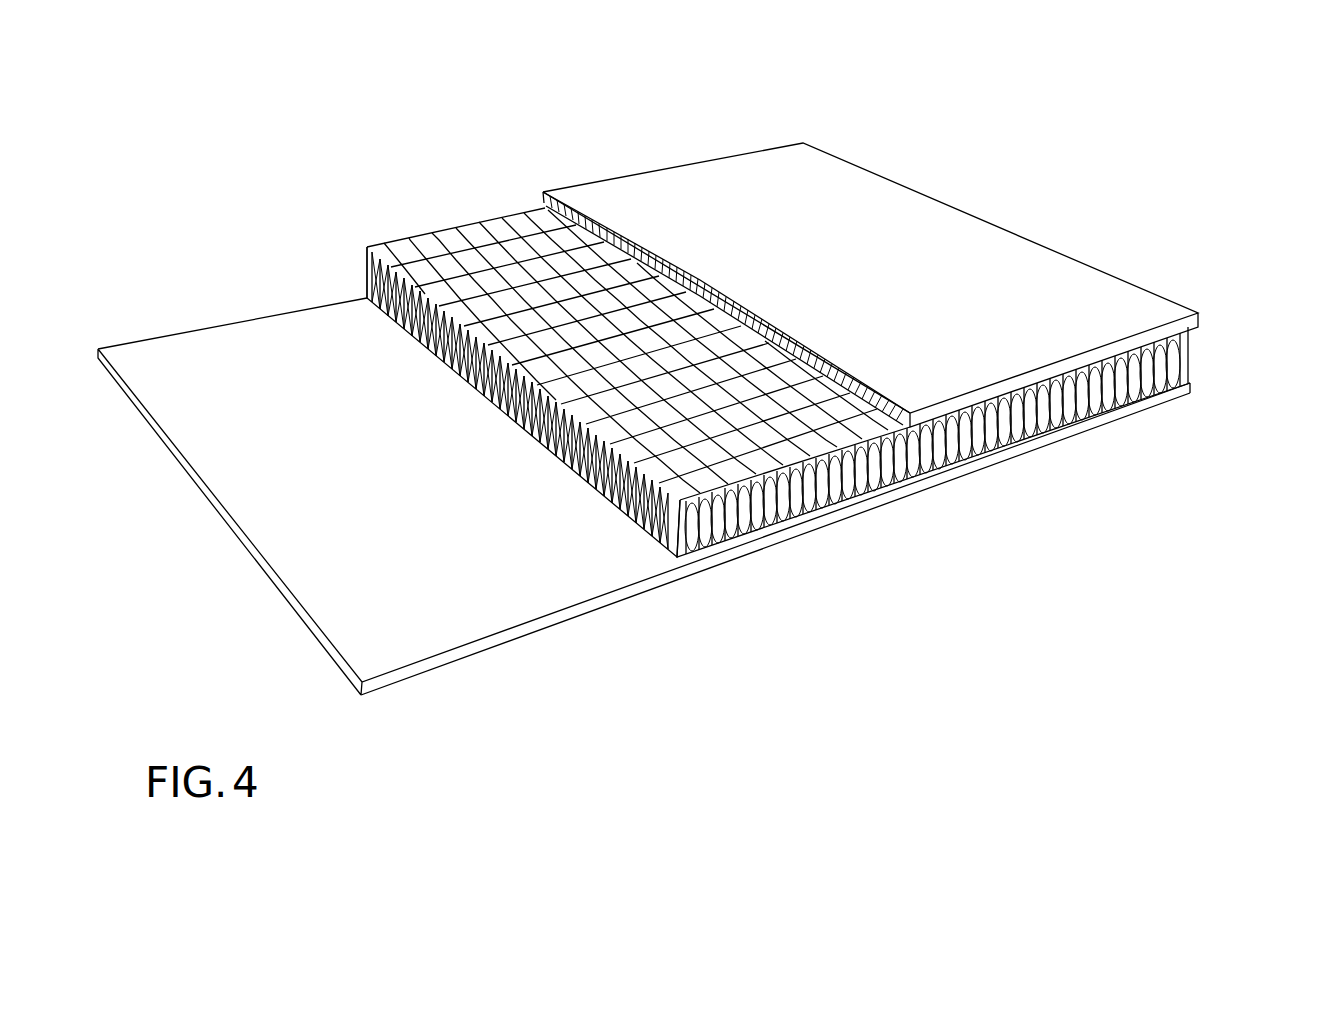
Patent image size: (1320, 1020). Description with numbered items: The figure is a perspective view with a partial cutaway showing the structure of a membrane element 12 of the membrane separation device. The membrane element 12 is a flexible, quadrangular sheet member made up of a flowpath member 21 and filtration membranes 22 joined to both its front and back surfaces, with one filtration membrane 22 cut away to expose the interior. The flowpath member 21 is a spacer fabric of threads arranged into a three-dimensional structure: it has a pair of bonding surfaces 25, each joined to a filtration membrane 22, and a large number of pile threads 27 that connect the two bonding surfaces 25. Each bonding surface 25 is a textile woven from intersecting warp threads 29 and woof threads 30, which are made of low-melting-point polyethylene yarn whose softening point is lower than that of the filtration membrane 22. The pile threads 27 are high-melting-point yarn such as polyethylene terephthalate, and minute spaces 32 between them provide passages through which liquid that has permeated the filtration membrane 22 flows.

The membrane element 12 is at (915, 176).
The flowpath member 21 is at (366, 246).
The filtration membrane 22 is at (173, 353).
The bonding surface 25 is at (765, 375).
The pile thread 27 is at (1185, 355).
The warp thread 29 is at (532, 213).
The woof thread 30 is at (495, 218).
The minute space 32 is at (1022, 460).